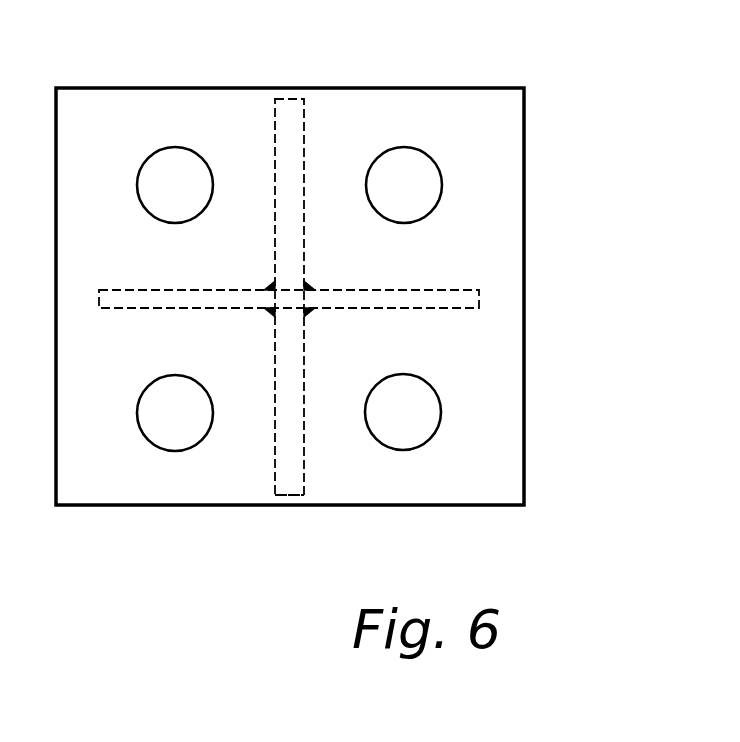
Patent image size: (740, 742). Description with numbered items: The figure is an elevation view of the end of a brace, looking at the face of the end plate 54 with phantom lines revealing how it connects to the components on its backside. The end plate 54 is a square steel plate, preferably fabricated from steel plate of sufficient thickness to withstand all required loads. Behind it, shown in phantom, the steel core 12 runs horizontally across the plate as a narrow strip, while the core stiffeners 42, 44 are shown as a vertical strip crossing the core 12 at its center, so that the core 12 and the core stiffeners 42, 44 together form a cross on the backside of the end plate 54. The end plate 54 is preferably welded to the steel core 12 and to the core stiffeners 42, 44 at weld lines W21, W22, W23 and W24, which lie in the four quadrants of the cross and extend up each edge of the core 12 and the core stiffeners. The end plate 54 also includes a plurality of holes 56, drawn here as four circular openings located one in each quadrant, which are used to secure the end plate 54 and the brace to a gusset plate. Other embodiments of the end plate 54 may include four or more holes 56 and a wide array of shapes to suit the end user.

The end plate 54 is at (520, 460).
The holes 56 is at (403, 446).
The core stiffener 42 is at (284, 98).
The core stiffener 44 is at (285, 497).
The steel core 12 is at (479, 296).
The weld line W21 is at (305, 204).
The weld line W22 is at (408, 310).
The weld line W23 is at (153, 310).
The weld line W24 is at (190, 288).